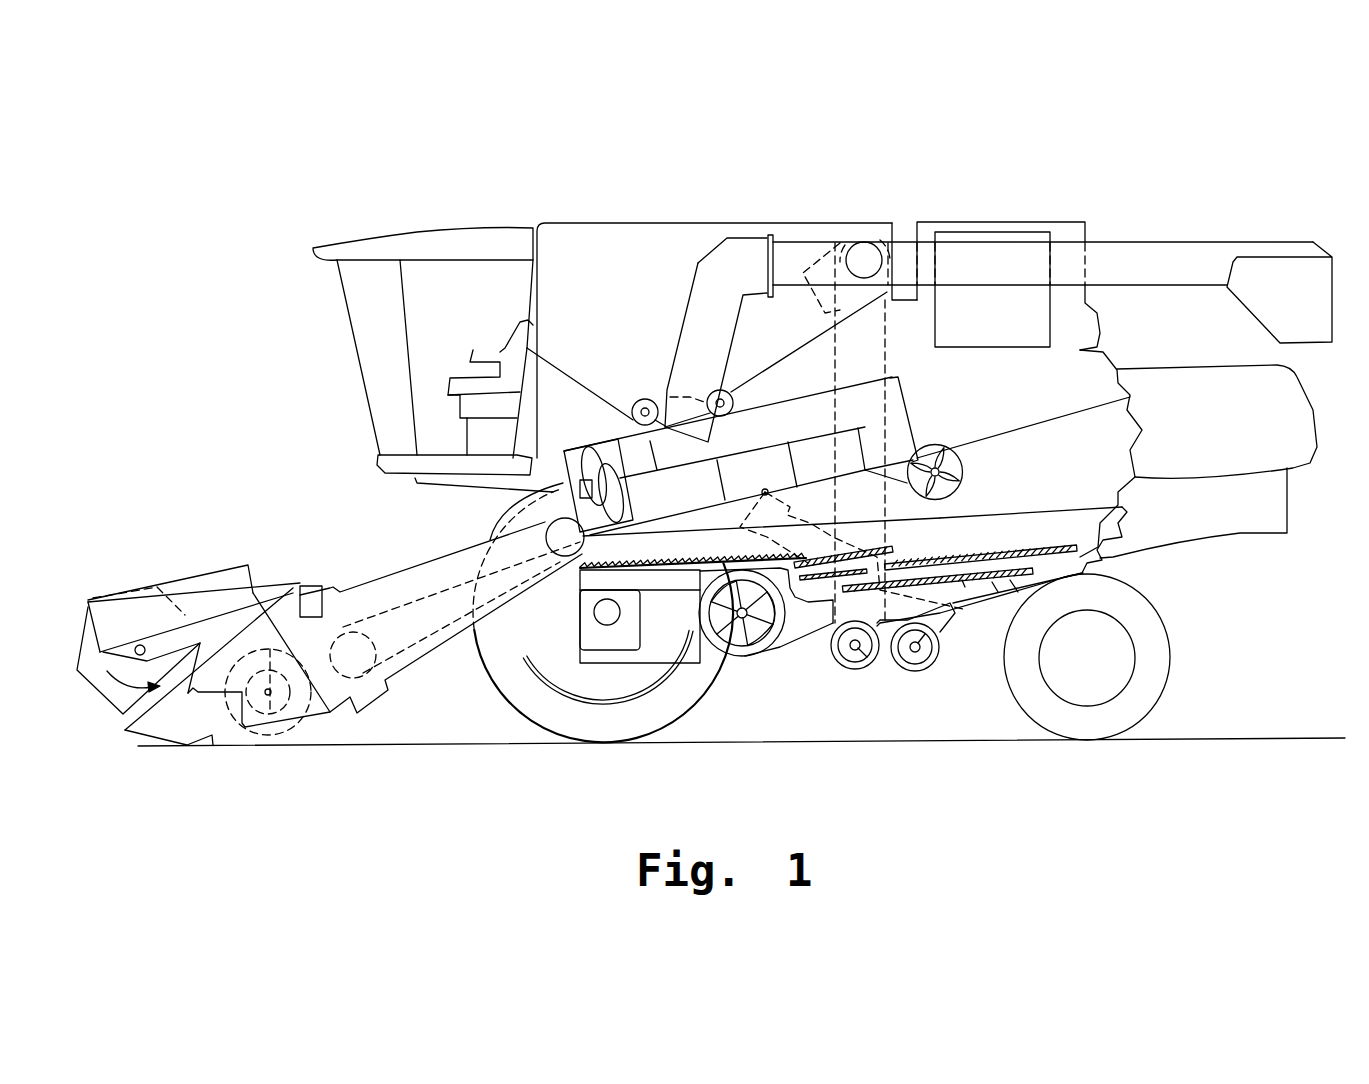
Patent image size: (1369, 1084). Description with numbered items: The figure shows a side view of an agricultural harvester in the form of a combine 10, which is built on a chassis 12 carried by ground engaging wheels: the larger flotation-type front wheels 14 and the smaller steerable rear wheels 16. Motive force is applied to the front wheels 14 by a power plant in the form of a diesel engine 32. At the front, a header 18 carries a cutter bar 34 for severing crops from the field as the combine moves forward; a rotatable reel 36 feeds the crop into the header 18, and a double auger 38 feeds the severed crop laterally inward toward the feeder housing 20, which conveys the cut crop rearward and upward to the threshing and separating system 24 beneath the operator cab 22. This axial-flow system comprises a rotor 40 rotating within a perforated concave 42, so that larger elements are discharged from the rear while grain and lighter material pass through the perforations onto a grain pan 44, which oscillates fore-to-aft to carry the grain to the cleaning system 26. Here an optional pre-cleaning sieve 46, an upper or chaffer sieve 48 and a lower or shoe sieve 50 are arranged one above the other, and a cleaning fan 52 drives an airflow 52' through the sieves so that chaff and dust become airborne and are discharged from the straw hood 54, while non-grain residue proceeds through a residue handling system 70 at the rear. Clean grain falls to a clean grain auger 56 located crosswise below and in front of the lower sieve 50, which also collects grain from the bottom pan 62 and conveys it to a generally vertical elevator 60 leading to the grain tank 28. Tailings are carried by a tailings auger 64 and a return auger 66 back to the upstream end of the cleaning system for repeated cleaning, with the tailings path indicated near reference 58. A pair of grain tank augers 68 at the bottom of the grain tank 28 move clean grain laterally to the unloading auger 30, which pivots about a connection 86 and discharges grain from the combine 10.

The combine 10 is at (413, 202).
The chassis 12 is at (1083, 572).
The front wheels 14 is at (507, 698).
The rear wheels 16 is at (1163, 675).
The header 18 is at (172, 555).
The feeder housing 20 is at (395, 568).
The operator cab 22 is at (353, 335).
The threshing and separating system 24 is at (498, 503).
The cleaning system 26 is at (808, 677).
The grain tank 28 is at (593, 230).
The unloading auger 30 is at (1182, 243).
The diesel engine 32 is at (980, 233).
The cutter bar 34 is at (192, 746).
The rotatable reel 36 is at (88, 640).
The double auger 38 is at (274, 723).
The rotor 40 is at (593, 457).
The perforated concave 42 is at (780, 432).
The grain pan 44 is at (580, 570).
The pre-cleaning sieve 46 is at (893, 550).
The upper sieve 48 is at (997, 550).
The lower sieve 50 is at (965, 587).
The cleaning fan 52 is at (742, 653).
The air flow 52' is at (732, 723).
The straw hood 54 is at (1297, 408).
The clean grain auger 56 is at (862, 669).
The tailings auger 58 is at (1018, 592).
The elevator 60 is at (887, 353).
The bottom pan 62 is at (998, 592).
The tailings auger 64 is at (915, 671).
The return auger 66 is at (827, 533).
The grain tank augers 68 is at (643, 399).
The residue handling system 70 is at (1258, 557).
The unloading auger pivot 86 is at (880, 233).